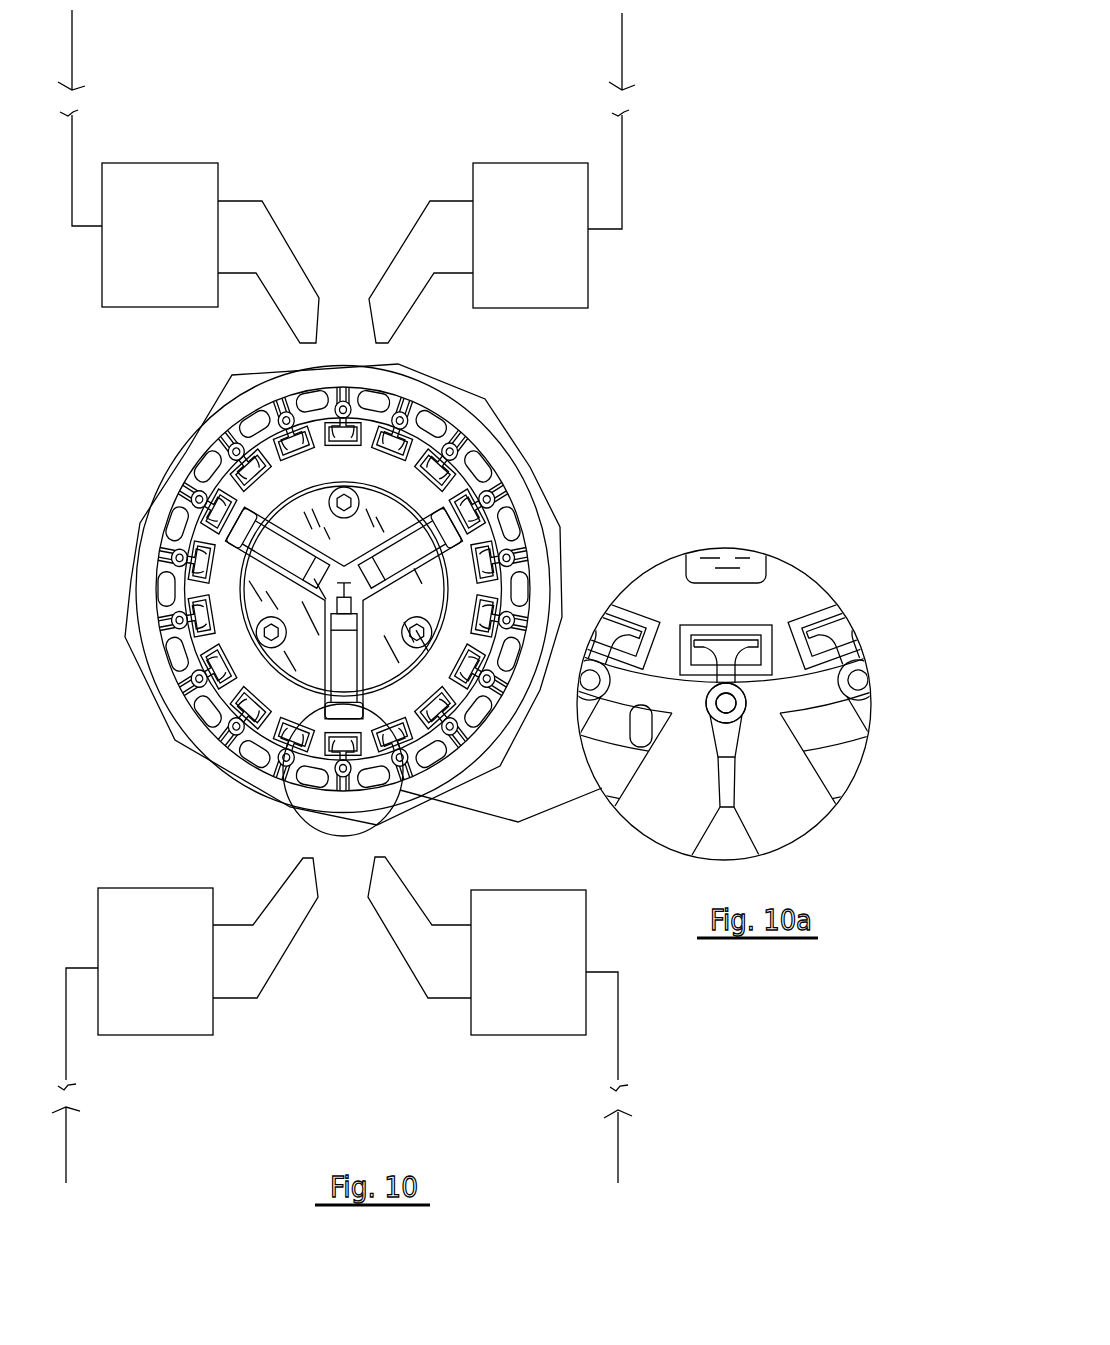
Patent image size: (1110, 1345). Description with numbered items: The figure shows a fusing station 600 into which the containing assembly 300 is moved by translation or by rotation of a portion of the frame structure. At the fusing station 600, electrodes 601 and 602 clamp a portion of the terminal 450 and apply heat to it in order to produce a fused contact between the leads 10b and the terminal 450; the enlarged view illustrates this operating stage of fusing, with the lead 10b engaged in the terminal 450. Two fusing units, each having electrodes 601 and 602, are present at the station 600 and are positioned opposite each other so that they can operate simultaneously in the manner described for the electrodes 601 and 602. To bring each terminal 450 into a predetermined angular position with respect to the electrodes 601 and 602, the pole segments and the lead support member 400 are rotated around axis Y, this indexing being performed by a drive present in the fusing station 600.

In FIG. 10, the fusing station 600 is at (665, 168).
In FIG. 10, the electrode 601 is at (282, 272).
In FIG. 10, the electrode 602 is at (402, 277).
In FIG. 10, the containing assembly 300 is at (371, 594).
In FIG. 10, the lead support member 400 is at (227, 638).
In FIG. 10A, the terminal 450 is at (675, 602).
In FIG. 10A, the lead 10b is at (740, 712).